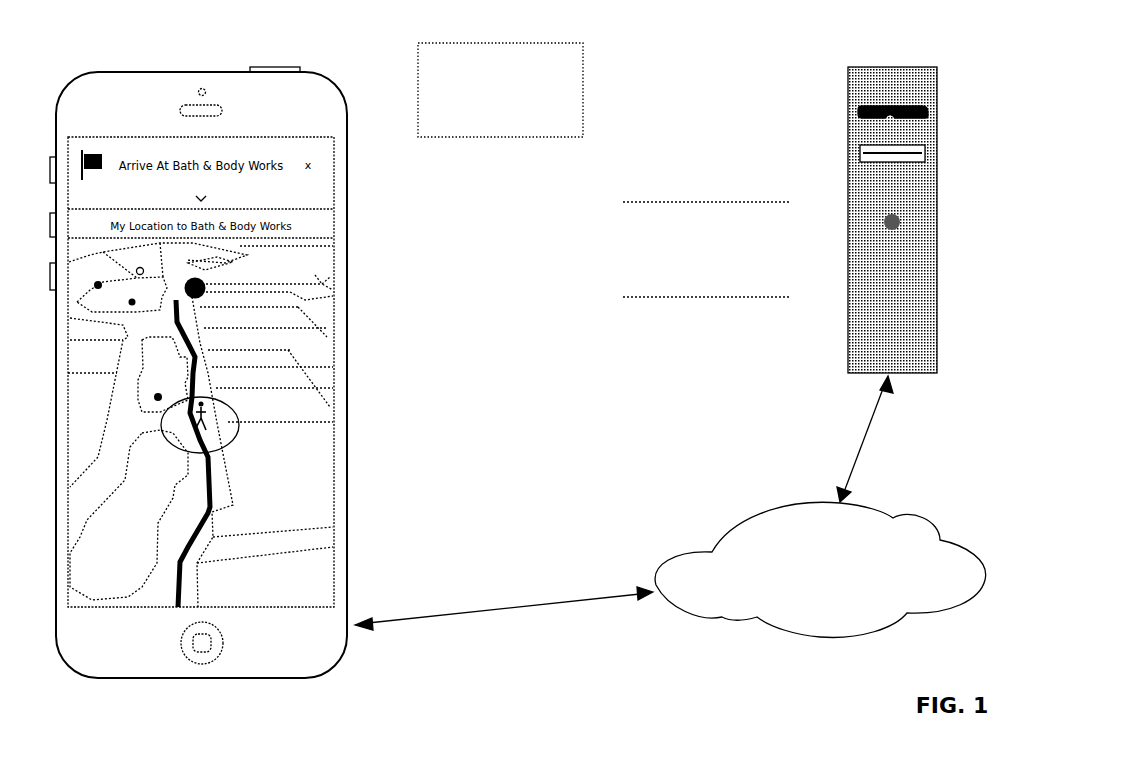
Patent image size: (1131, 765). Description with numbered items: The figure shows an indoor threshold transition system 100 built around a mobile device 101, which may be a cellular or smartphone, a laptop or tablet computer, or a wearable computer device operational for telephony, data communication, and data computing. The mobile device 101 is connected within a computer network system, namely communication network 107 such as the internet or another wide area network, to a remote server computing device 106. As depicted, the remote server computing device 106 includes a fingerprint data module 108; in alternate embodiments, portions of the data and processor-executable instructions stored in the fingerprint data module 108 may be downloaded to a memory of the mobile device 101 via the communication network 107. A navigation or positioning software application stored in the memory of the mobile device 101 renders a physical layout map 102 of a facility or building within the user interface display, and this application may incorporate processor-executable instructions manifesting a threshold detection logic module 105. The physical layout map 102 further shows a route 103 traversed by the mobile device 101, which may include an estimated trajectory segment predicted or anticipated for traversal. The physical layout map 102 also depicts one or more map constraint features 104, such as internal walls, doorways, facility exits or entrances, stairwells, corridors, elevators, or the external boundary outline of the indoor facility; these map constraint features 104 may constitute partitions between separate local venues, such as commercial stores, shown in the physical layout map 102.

The indoor navigation system 100 is at (1077, 81).
The mobile device 101 is at (257, 117).
The physical layout map 102 is at (97, 562).
The route 103 is at (210, 512).
The map constraint feature 104 is at (308, 372).
The threshold detection logic module 105 is at (345, 160).
The remote server computing device 106 is at (866, 279).
The communication network 107 is at (816, 611).
The fingerprint data module 108 is at (848, 178).